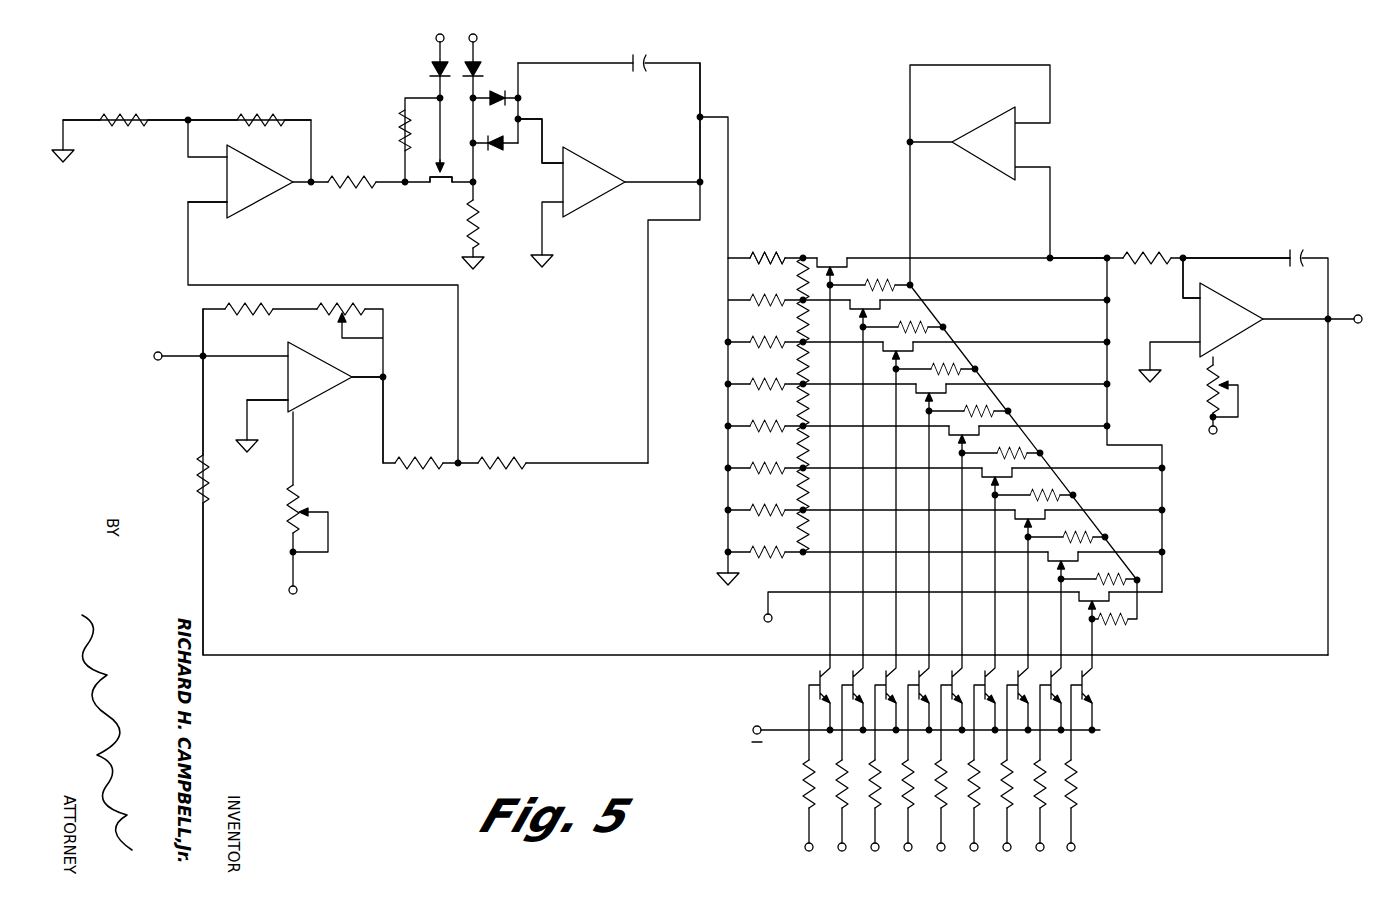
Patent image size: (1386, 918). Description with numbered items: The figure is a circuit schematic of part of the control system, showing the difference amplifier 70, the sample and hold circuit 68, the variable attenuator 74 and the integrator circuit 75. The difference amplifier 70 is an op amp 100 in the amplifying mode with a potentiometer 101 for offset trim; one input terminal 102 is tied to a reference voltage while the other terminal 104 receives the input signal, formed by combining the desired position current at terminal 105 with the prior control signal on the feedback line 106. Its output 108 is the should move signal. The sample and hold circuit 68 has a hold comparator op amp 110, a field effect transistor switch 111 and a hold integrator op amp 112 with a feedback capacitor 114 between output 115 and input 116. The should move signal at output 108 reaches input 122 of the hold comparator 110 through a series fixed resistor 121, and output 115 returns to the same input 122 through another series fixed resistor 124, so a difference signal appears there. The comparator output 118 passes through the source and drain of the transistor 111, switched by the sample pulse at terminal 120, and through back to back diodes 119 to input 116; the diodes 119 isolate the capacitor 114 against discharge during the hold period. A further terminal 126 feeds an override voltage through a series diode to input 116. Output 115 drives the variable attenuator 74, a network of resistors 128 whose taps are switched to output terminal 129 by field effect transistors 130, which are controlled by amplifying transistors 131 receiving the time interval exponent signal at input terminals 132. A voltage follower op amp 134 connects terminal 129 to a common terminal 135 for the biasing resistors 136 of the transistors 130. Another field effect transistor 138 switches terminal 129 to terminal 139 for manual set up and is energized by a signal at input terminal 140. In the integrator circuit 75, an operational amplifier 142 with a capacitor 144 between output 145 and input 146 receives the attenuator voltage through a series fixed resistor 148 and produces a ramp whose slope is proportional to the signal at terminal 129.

The sample and hold circuit 68 is at (348, 115).
The difference amplifier 70 is at (198, 430).
The variable attenuator 74 is at (698, 541).
The integrator circuit 75 is at (1234, 248).
The op amp 100 is at (320, 398).
The potentiometer 101 is at (288, 510).
The input terminal 102 is at (262, 397).
The input terminal 104 is at (250, 355).
The terminal 105 is at (155, 351).
The feedback line 106 is at (206, 546).
The output 108 is at (388, 387).
The hold comparator op amp 110 is at (262, 200).
The field effect transistor switch 111 is at (440, 186).
The hold integrator op amp 112 is at (592, 170).
The feedback capacitor 114 is at (632, 58).
The output 115 is at (702, 115).
The input 116 is at (542, 128).
The output 118 is at (312, 180).
The back to back diodes 119 is at (508, 96).
The terminal 120 is at (436, 39).
The series fixed resistor 121 is at (416, 468).
The input 122 is at (186, 204).
The series fixed resistor 124 is at (497, 468).
The terminal 126 is at (477, 38).
The network of resistors 128 is at (790, 248).
The output terminal 129 is at (1107, 255).
The field effect transistors 130 is at (867, 305).
The amplifying transistors 131 is at (1101, 688).
The input terminals 132 is at (797, 851).
The op amp 134 is at (988, 122).
The common terminal 135 is at (912, 286).
The biasing resistors 136 is at (975, 410).
The field effect transistor 138 is at (1108, 600).
The terminal 139 is at (762, 620).
The input terminal 140 is at (1077, 847).
The operational amplifier 142 is at (1228, 300).
The capacitor 144 is at (1290, 250).
The output 145 is at (1343, 318).
The input 146 is at (1183, 280).
The series fixed resistor 148 is at (1150, 252).